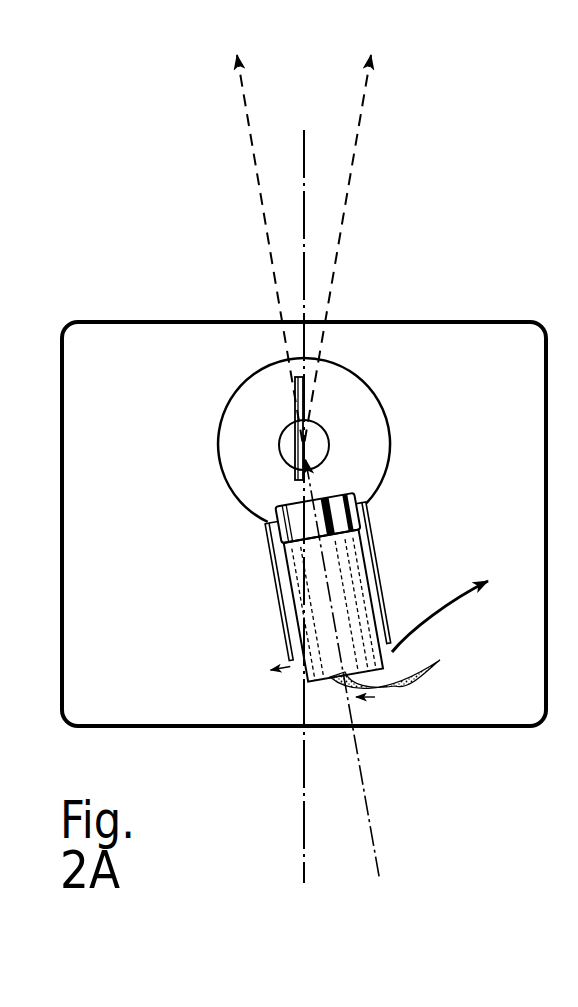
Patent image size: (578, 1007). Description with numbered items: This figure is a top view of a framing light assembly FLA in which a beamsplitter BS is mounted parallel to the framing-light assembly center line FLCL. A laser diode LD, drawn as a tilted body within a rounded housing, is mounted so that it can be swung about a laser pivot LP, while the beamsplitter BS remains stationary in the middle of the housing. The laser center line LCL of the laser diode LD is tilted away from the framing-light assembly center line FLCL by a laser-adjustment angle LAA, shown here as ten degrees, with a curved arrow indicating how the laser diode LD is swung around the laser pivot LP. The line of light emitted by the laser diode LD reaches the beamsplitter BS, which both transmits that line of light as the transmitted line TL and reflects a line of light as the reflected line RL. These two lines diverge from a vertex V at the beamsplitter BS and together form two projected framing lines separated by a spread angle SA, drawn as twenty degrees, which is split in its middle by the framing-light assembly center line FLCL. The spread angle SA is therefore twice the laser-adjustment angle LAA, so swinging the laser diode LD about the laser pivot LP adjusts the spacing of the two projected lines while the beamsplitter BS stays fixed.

The framing light assembly FLA is at (118, 304).
The framing-light assembly center line FLCL is at (318, 250).
The laser center line LCL is at (368, 792).
The transmitted line TL is at (262, 254).
The reflected line RL is at (340, 278).
The spread angle SA is at (364, 87).
The laser-adjustment angle LAA is at (410, 848).
The beamsplitter BS is at (292, 410).
The vertex V is at (310, 445).
The laser pivot LP is at (273, 455).
The laser diode LD is at (357, 490).